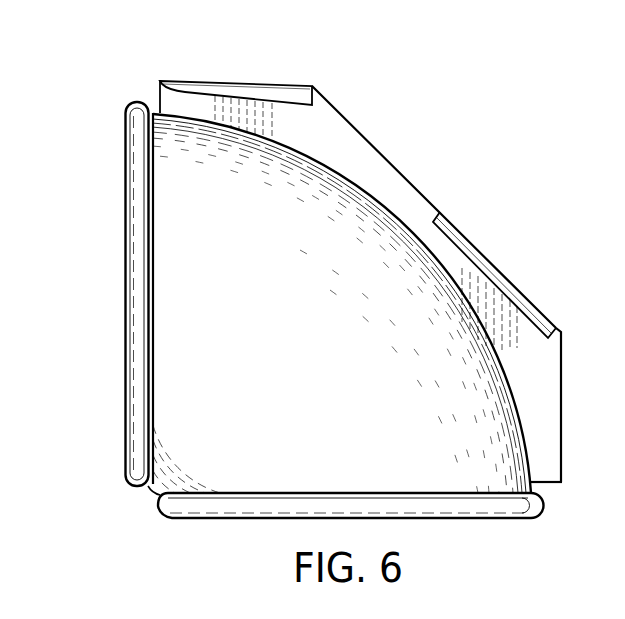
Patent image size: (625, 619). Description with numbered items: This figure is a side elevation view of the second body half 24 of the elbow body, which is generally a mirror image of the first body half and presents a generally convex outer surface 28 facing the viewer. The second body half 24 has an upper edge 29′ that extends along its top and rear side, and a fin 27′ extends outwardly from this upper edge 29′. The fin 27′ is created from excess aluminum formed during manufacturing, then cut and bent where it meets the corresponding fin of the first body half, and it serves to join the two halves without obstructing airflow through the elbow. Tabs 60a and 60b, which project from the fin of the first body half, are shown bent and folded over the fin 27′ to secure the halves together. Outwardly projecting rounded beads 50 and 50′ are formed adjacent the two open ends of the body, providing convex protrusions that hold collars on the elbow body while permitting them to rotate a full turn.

The second body half 24 is at (320, 338).
The fin 27′ is at (329, 138).
The convex outer surface 28 is at (200, 303).
The upper edge 29′ is at (390, 213).
The bead 50 is at (140, 212).
The bead 50′ is at (211, 502).
The tab 60a is at (228, 97).
The tab 60b is at (453, 232).